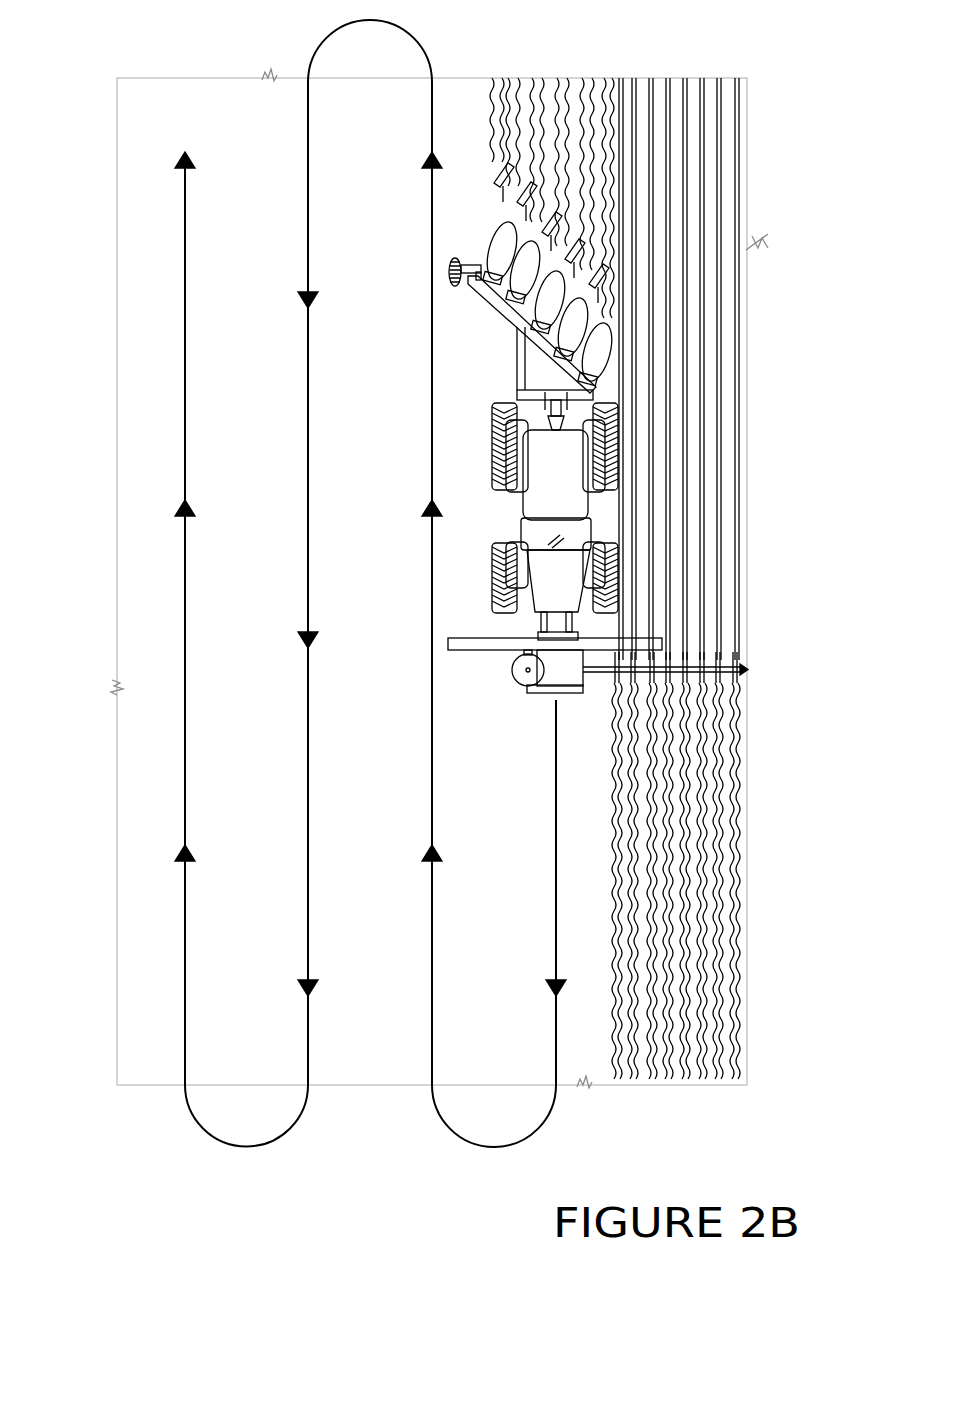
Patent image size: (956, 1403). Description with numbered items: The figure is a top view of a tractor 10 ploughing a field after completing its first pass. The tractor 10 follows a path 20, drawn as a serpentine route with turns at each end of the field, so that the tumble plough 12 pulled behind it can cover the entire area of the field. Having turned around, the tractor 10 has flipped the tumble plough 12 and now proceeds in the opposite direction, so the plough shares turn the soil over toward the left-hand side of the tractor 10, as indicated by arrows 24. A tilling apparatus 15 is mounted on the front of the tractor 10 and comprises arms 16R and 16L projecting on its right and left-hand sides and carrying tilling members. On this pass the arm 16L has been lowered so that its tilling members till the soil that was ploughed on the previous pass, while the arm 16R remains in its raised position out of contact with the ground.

The path 20 is at (182, 410).
The tractor 10 is at (545, 480).
The tumble plough 12 is at (547, 320).
The arrows 24 is at (520, 197).
The tilling apparatus 15 is at (538, 693).
The arm 16R is at (523, 672).
The arm 16L is at (677, 678).